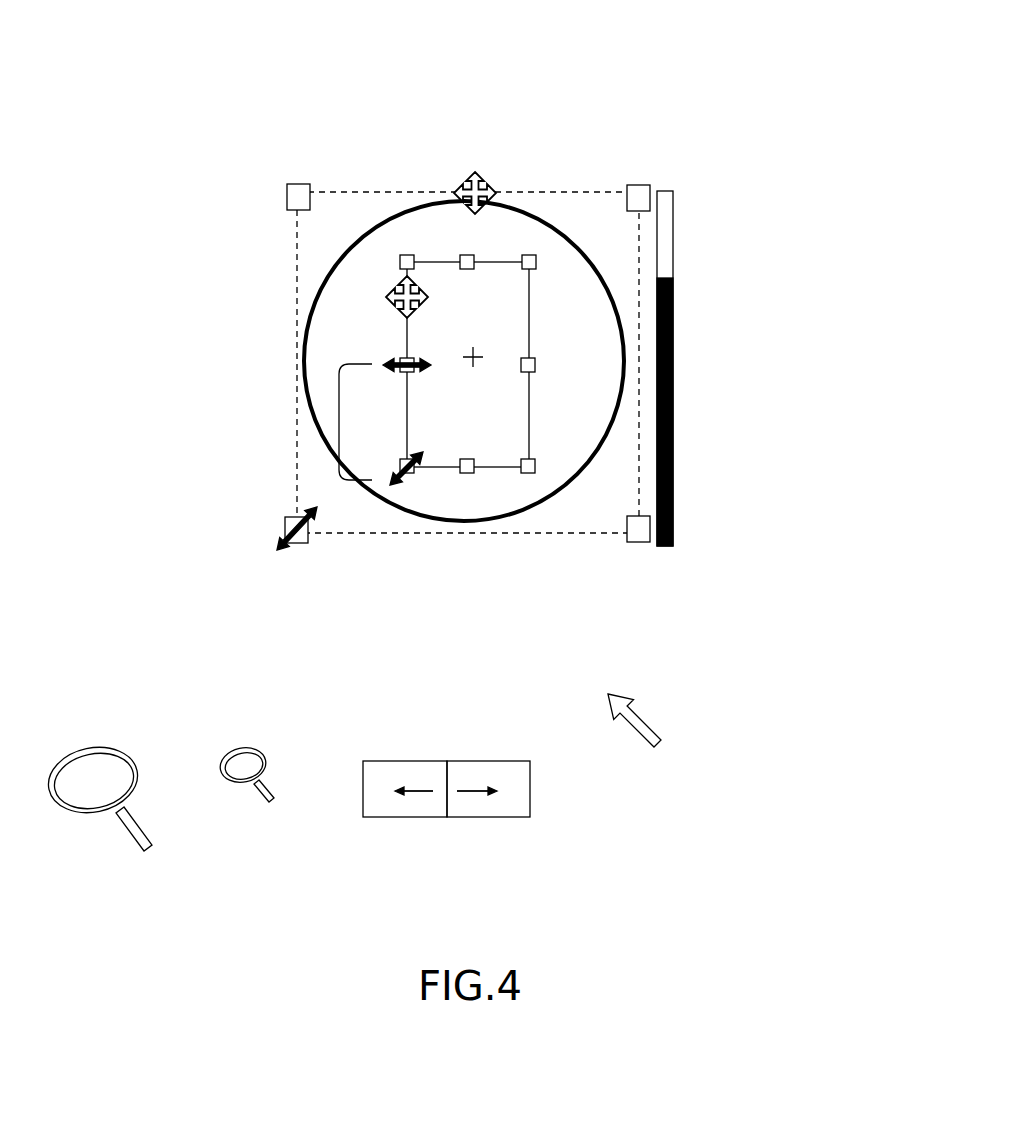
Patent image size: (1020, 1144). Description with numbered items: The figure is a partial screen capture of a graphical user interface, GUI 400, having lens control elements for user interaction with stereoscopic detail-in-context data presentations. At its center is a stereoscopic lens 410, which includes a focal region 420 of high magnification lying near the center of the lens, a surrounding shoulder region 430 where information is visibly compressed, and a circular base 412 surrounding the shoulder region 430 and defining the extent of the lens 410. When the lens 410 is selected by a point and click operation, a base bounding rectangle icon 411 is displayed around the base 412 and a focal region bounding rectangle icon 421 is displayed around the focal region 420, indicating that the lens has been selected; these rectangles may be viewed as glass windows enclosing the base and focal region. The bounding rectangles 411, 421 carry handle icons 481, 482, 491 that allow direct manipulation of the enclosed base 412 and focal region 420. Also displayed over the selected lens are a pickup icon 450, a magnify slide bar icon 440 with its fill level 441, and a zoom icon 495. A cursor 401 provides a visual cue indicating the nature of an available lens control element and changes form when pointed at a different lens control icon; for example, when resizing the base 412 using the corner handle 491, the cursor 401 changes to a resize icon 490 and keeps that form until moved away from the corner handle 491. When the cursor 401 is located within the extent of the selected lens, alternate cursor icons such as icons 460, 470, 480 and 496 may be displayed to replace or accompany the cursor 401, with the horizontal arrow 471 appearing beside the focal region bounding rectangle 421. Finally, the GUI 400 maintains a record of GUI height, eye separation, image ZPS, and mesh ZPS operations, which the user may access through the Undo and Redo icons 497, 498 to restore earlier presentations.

The graphical user interface 400 is at (498, 35).
The cursor 401 is at (640, 722).
The stereoscopic lens 410 is at (343, 510).
The base bounding rectangle icon 411 is at (367, 535).
The base 412 is at (415, 518).
The focal region 420 is at (488, 430).
The focal region bounding rectangle icon 421 is at (483, 470).
The shoulder region 430 is at (463, 505).
The magnify slide bar icon 440 is at (672, 390).
The slider fill level 441 is at (668, 276).
The pickup icon 450 is at (477, 362).
The alternate cursor icon 460 is at (473, 170).
The alternate cursor icon 470 is at (385, 300).
The horizontal resize arrow 471 is at (403, 340).
The alternate cursor icon 480 is at (339, 418).
The handle icon 481 is at (535, 262).
The handle icon 482 is at (470, 258).
The resize icon 490 is at (277, 543).
The corner handle 491 is at (636, 542).
The zoom icon 495 is at (137, 840).
The alternate cursor icon 496 is at (265, 802).
The Undo icon 497 is at (377, 803).
The Redo icon 498 is at (470, 805).